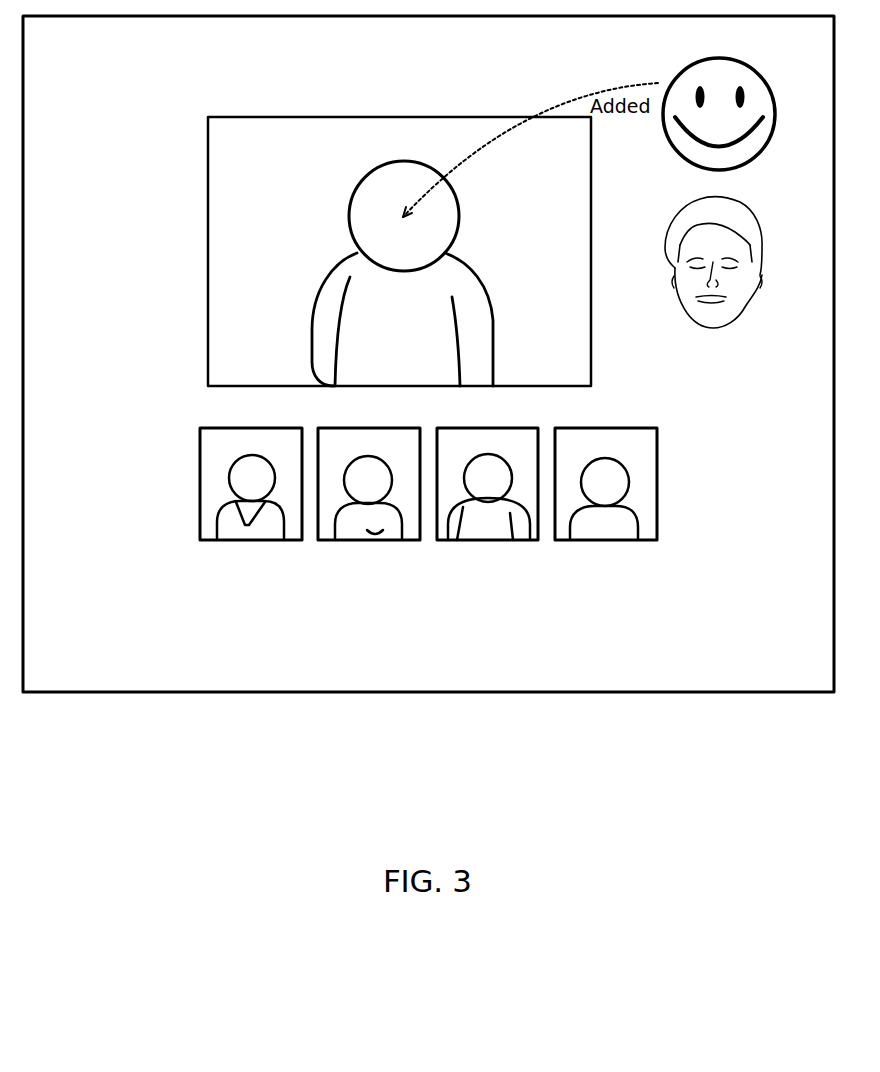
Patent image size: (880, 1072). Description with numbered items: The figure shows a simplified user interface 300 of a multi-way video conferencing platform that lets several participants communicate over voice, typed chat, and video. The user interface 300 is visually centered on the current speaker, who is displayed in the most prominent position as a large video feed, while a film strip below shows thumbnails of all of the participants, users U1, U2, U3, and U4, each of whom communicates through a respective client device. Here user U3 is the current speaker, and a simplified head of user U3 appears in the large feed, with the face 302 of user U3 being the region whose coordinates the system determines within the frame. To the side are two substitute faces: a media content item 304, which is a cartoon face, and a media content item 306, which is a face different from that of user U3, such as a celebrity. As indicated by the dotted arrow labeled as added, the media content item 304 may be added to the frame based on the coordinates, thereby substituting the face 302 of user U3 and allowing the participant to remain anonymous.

The user interface 300 is at (448, 757).
The face 302 is at (442, 217).
The media content item 304 is at (763, 98).
The media content item 306 is at (737, 300).
The user U1 is at (278, 505).
The user U2 is at (395, 505).
The user U3 is at (485, 293).
The user U4 is at (635, 505).